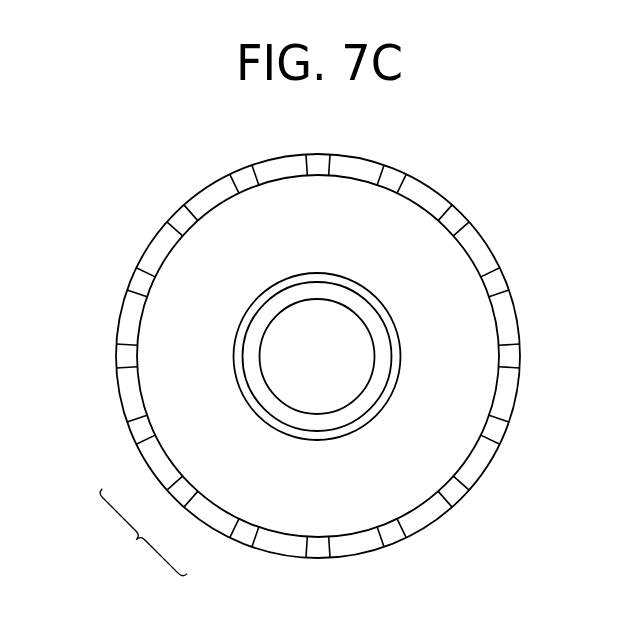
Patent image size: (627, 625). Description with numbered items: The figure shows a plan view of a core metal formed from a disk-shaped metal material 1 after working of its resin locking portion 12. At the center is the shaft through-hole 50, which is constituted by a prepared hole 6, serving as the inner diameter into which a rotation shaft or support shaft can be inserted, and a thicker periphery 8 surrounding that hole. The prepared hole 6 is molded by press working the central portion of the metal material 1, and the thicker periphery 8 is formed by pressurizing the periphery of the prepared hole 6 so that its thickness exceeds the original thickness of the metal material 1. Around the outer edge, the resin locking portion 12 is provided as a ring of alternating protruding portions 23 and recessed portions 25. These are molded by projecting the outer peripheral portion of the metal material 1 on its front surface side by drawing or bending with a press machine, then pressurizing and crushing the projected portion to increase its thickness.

The disk-shaped metal material 1 is at (390, 222).
The protruding portions 23 is at (482, 250).
The resin locking portion 12 is at (371, 355).
The recessed portions 25 is at (455, 495).
The thicker periphery 8 is at (258, 385).
The prepared hole 6 is at (287, 390).
The shaft through-hole 50 is at (140, 535).